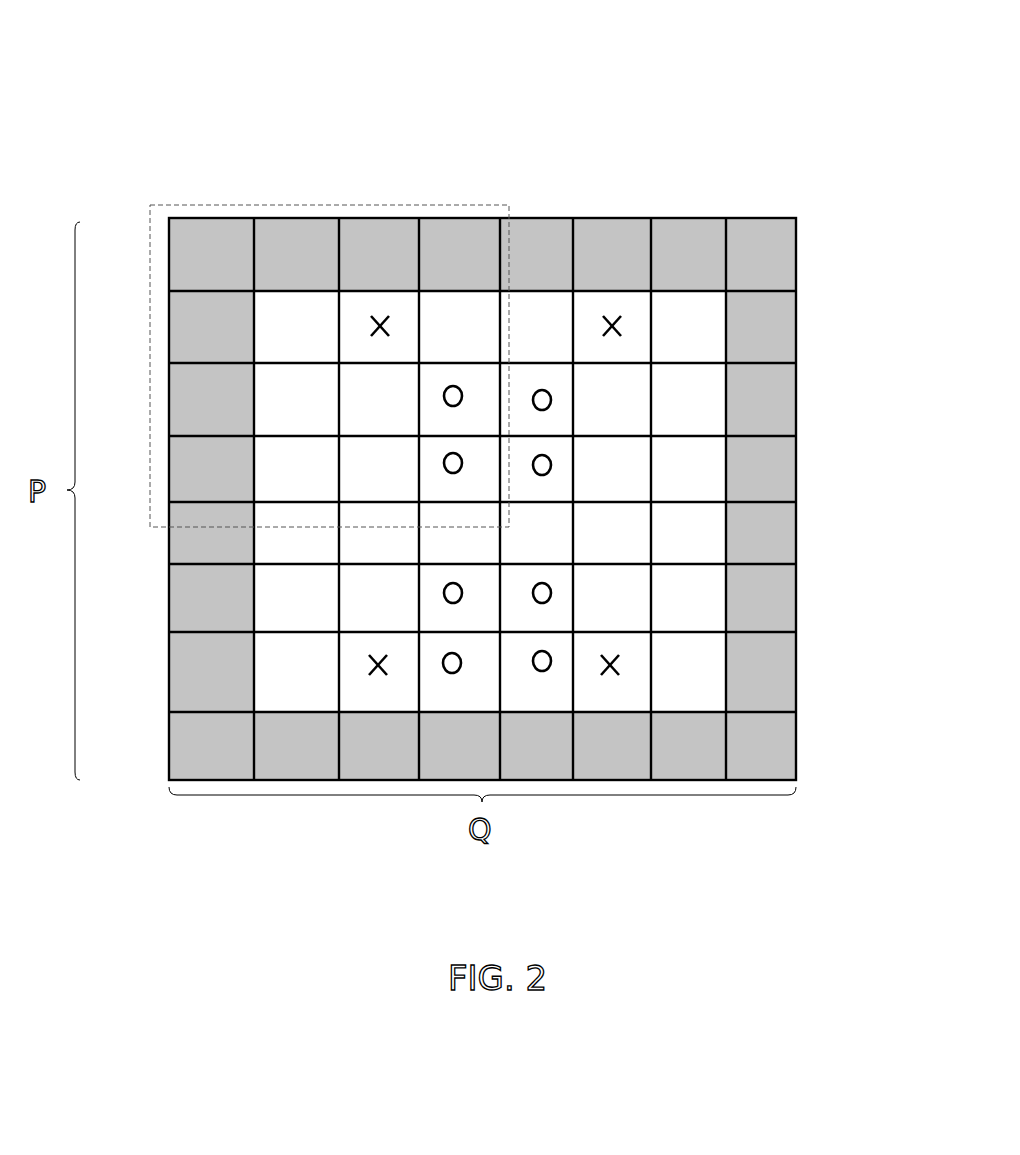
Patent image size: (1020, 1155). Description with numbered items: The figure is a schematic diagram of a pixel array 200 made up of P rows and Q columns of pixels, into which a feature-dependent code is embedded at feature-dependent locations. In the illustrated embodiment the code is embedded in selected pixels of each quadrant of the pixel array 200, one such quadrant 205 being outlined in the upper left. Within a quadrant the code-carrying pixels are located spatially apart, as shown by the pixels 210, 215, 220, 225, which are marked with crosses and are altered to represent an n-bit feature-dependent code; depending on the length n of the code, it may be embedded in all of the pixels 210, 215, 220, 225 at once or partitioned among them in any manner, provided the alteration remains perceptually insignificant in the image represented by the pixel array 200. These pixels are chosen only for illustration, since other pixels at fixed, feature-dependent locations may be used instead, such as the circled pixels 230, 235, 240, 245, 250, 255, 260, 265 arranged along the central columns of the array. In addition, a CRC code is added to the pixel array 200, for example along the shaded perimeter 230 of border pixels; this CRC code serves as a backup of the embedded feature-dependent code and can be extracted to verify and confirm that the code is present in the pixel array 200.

The pixel array 200 is at (482, 391).
The quadrant 205 is at (150, 242).
The pixel 210 is at (369, 325).
The pixel 215 is at (622, 327).
The pixel 220 is at (367, 665).
The pixel 225 is at (620, 665).
The pixel / perimeter 230 is at (443, 396).
The pixel 235 is at (443, 463).
The pixel 240 is at (443, 593).
The pixel 245 is at (447, 672).
The pixel 250 is at (541, 670).
The pixel 255 is at (552, 593).
The pixel 260 is at (552, 467).
The pixel 265 is at (552, 400).